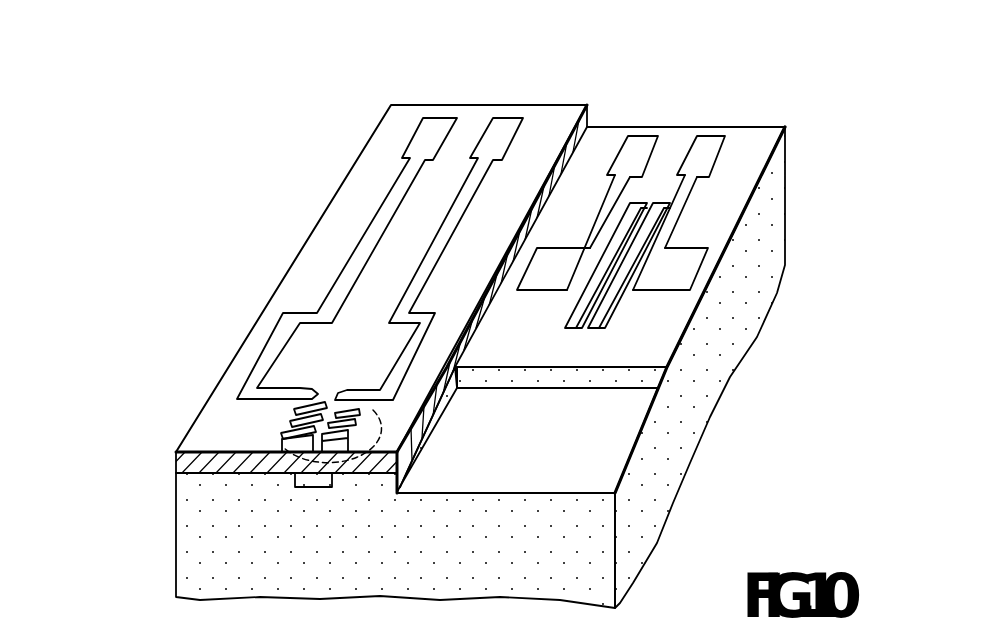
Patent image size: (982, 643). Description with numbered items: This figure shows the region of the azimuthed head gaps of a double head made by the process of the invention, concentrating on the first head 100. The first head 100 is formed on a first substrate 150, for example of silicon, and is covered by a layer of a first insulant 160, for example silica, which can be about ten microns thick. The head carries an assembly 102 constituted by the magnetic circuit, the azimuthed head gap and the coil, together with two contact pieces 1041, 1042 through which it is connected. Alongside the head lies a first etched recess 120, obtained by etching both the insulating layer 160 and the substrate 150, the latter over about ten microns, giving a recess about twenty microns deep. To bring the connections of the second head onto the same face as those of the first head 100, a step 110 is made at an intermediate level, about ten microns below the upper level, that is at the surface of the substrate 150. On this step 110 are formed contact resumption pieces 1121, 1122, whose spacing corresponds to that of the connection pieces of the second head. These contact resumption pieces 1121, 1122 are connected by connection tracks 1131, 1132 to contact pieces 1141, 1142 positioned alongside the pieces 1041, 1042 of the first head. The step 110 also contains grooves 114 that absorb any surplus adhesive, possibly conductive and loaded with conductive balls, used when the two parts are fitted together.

The first head 100 is at (302, 265).
The assembly 102 is at (266, 416).
The contact piece 1041 is at (498, 128).
The contact piece 1042 is at (437, 128).
The step 110 is at (747, 170).
The contact resumption piece 1121 is at (556, 282).
The contact resumption piece 1122 is at (690, 277).
The connection track 1131 is at (610, 212).
The connection track 1132 is at (687, 207).
The grooves 114 is at (610, 305).
The contact piece 1141 is at (664, 142).
The contact piece 1142 is at (717, 142).
The first etched recess 120 is at (617, 423).
The substrate 150 is at (190, 546).
The layer of first insulant 160 is at (183, 462).